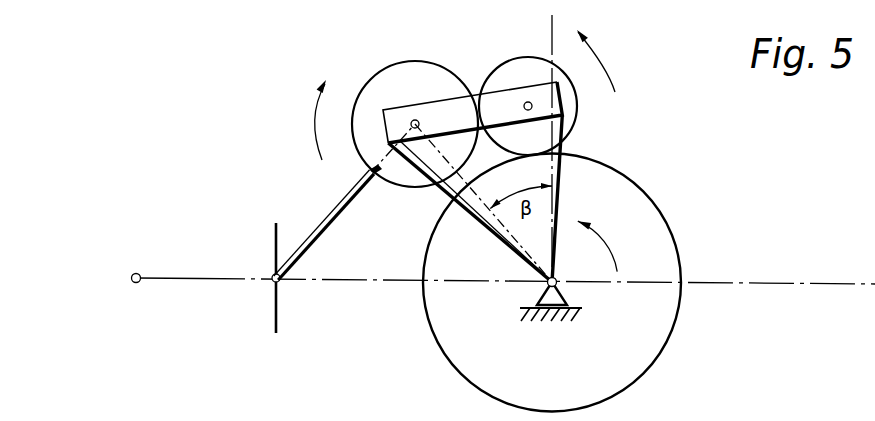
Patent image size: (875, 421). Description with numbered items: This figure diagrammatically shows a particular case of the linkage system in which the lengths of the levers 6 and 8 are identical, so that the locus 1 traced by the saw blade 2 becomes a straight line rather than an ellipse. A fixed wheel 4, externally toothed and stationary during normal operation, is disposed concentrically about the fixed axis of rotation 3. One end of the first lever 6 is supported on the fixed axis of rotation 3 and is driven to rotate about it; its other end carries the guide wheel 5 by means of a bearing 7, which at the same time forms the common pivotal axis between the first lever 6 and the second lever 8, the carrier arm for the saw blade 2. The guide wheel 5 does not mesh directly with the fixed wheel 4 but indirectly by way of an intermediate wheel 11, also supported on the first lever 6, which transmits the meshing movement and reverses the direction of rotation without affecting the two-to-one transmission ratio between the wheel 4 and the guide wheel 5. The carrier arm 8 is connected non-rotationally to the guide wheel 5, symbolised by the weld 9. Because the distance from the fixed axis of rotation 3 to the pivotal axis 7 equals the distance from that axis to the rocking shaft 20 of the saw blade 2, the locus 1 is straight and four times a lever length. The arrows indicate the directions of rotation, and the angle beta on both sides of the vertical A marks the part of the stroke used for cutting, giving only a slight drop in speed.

The locus 1 is at (783, 282).
The saw blade 2 is at (275, 333).
The fixed axis of rotation 3 is at (566, 287).
The fixed wheel 4 is at (673, 238).
The guide wheel 5 is at (357, 95).
The first lever 6 is at (457, 205).
The bearing 7 is at (418, 109).
The second lever 8 is at (324, 227).
The weld 9 is at (378, 180).
The intermediate wheel 11 is at (577, 123).
The rocking shaft 20 is at (275, 278).
The vertical A is at (560, 156).